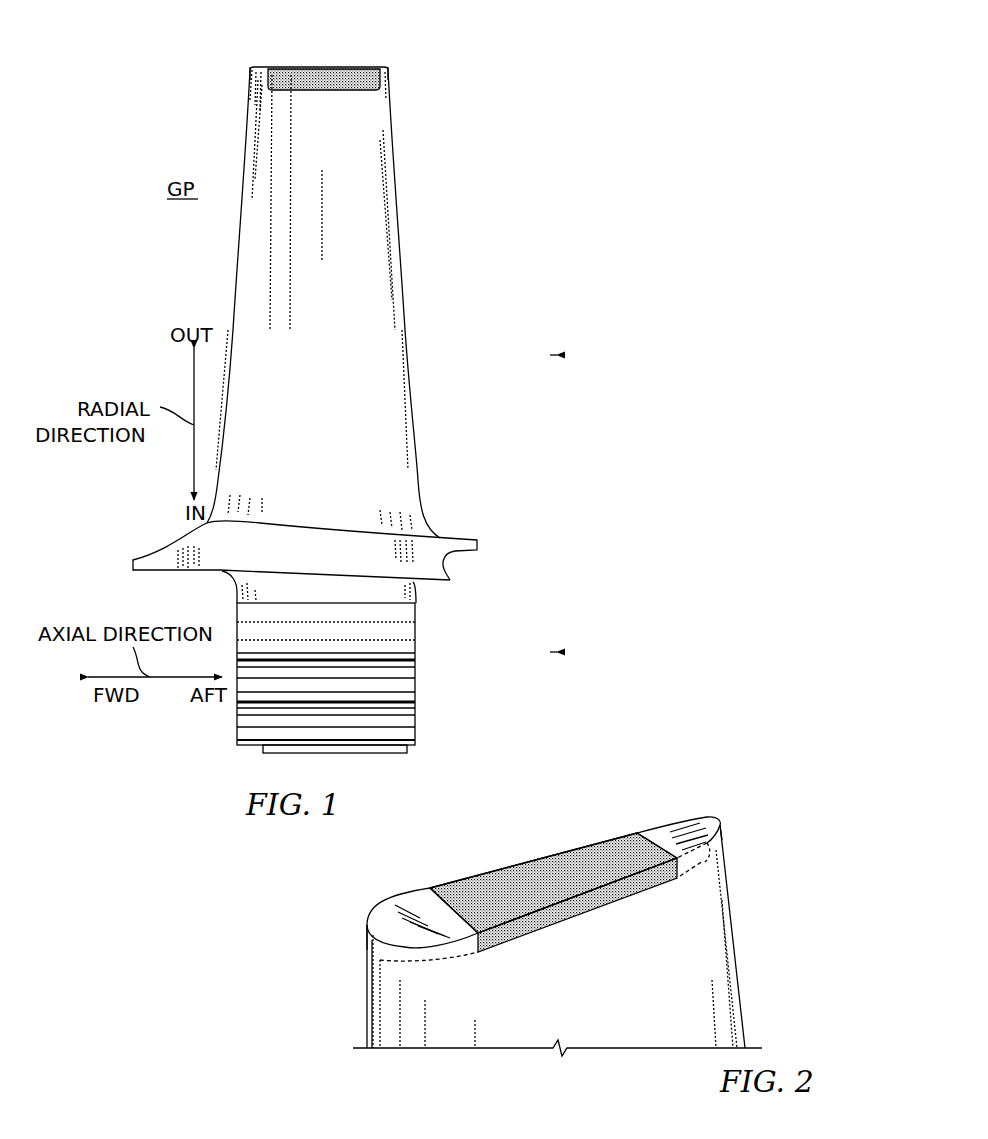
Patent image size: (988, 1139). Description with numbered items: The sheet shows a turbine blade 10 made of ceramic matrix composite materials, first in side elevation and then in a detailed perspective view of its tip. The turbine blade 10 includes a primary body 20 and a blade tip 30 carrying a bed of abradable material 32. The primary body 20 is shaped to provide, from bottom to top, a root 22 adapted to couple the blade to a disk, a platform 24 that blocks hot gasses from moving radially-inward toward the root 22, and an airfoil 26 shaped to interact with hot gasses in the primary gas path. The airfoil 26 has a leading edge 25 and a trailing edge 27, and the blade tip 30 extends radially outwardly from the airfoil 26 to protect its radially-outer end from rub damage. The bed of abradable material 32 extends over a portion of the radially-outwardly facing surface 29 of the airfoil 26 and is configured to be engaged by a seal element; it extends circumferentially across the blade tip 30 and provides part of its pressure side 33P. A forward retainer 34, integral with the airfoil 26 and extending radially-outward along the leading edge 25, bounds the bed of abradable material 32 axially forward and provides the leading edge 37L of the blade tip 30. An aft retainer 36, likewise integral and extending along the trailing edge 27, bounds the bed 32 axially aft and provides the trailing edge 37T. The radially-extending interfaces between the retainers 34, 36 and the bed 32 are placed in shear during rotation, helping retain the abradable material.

In FIG. 1, the turbine blade 10 is at (560, 50).
In FIG. 1, the primary body 20 is at (557, 355).
In FIG. 1, the root 22 is at (421, 692).
In FIG. 1, the platform 24 is at (481, 545).
In FIG. 1, the leading edge 25 is at (231, 304).
In FIG. 2, the leading edge 25 is at (366, 1005).
In FIG. 1, the airfoil 26 is at (421, 403).
In FIG. 2, the airfoil 26 is at (744, 1000).
In FIG. 1, the trailing edge 27 is at (401, 278).
In FIG. 2, the trailing edge 27 is at (734, 931).
In FIG. 2, the radially-outwardly facing surface 29 is at (703, 863).
In FIG. 1, the blade tip 30 is at (395, 80).
In FIG. 2, the blade tip 30 is at (714, 811).
In FIG. 1, the bed of abradable material 32 is at (333, 62).
In FIG. 2, the bed of abradable material 32 is at (567, 864).
In FIG. 2, the pressure side 33P is at (492, 876).
In FIG. 1, the forward retainer 34 is at (262, 62).
In FIG. 2, the forward retainer 34 is at (413, 893).
In FIG. 1, the aft retainer 36 is at (386, 64).
In FIG. 2, the aft retainer 36 is at (672, 829).
In FIG. 1, the leading edge of the blade tip 37L is at (250, 78).
In FIG. 2, the leading edge of the blade tip 37L is at (367, 946).
In FIG. 1, the trailing edge of the blade tip 37T is at (389, 73).
In FIG. 2, the trailing edge of the blade tip 37T is at (721, 826).